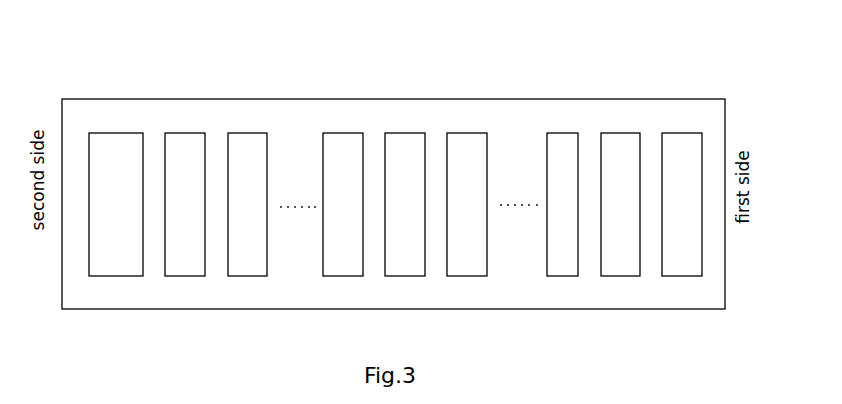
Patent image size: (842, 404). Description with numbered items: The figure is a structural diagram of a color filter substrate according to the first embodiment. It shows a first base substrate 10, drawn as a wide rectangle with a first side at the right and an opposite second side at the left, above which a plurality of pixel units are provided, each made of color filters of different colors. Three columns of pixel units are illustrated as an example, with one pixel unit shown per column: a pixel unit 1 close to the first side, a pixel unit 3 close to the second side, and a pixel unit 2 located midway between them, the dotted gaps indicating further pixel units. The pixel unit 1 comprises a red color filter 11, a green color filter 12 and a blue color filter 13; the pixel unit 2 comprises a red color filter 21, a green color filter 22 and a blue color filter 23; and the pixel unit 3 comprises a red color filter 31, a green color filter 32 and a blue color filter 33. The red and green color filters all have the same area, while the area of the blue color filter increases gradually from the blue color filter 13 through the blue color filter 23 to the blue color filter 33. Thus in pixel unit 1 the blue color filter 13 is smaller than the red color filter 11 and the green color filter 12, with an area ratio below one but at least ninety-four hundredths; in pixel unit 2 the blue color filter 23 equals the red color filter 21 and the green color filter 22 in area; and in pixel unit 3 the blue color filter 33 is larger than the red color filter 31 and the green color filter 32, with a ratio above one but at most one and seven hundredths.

The first base substrate 10 is at (300, 118).
The pixel unit 1 is at (663, 58).
The red color filter 11 is at (685, 144).
The green color filter 12 is at (627, 144).
The blue color filter 13 is at (569, 144).
The pixel unit 2 is at (335, 58).
The red color filter 21 is at (472, 144).
The green color filter 22 is at (415, 144).
The blue color filter 23 is at (357, 144).
The pixel unit 3 is at (105, 58).
The red color filter 31 is at (244, 144).
The green color filter 32 is at (185, 144).
The blue color filter 33 is at (127, 144).